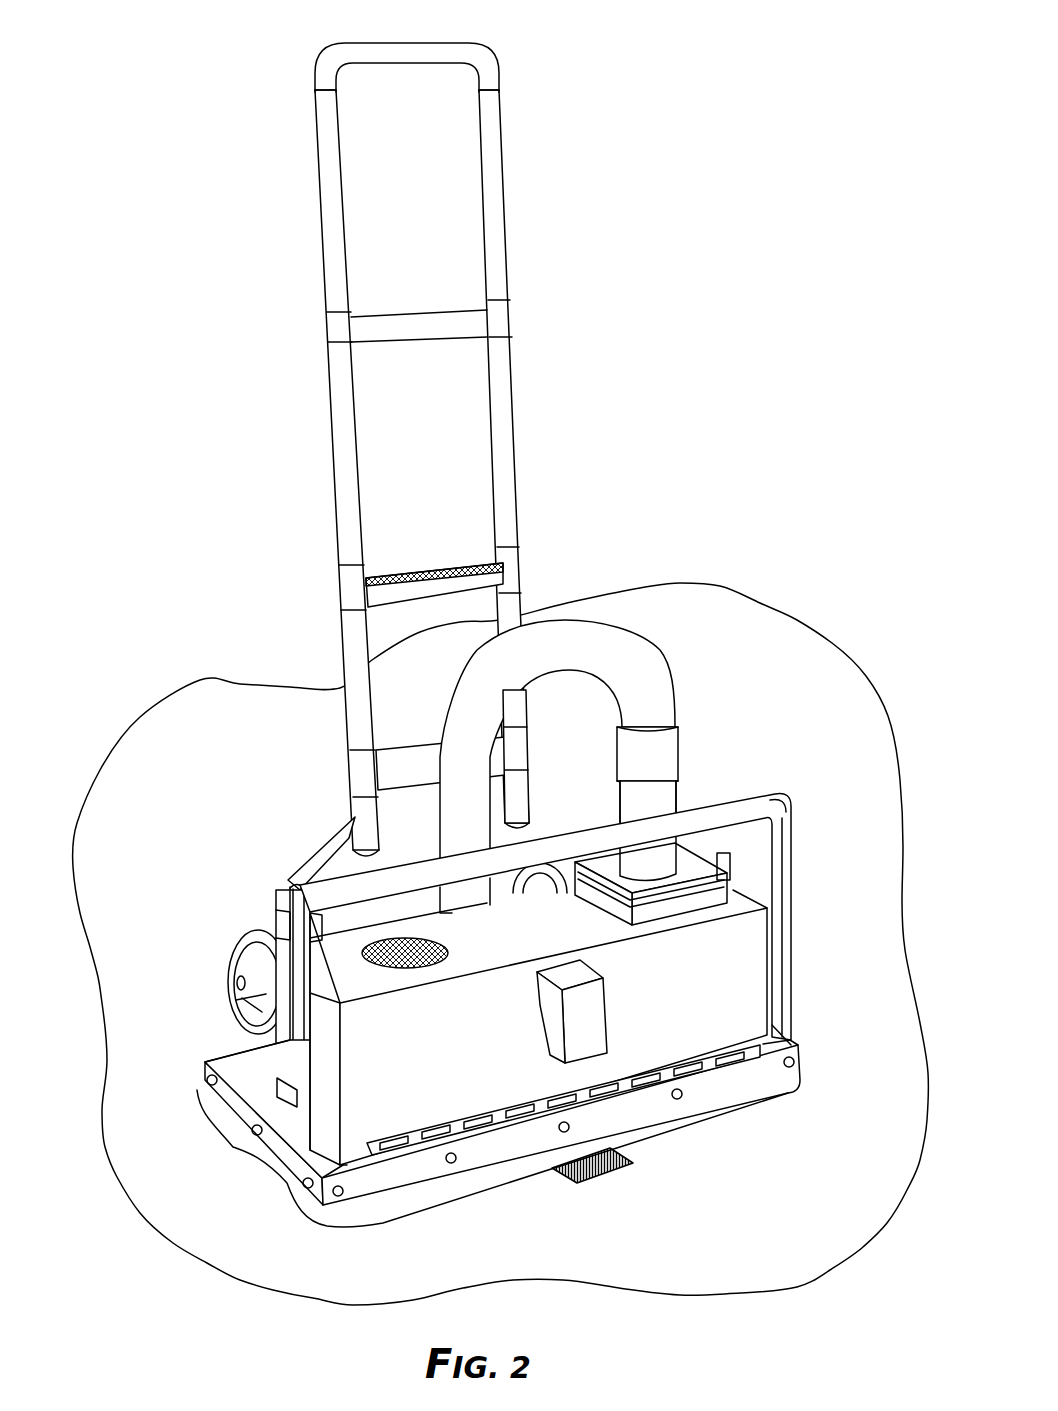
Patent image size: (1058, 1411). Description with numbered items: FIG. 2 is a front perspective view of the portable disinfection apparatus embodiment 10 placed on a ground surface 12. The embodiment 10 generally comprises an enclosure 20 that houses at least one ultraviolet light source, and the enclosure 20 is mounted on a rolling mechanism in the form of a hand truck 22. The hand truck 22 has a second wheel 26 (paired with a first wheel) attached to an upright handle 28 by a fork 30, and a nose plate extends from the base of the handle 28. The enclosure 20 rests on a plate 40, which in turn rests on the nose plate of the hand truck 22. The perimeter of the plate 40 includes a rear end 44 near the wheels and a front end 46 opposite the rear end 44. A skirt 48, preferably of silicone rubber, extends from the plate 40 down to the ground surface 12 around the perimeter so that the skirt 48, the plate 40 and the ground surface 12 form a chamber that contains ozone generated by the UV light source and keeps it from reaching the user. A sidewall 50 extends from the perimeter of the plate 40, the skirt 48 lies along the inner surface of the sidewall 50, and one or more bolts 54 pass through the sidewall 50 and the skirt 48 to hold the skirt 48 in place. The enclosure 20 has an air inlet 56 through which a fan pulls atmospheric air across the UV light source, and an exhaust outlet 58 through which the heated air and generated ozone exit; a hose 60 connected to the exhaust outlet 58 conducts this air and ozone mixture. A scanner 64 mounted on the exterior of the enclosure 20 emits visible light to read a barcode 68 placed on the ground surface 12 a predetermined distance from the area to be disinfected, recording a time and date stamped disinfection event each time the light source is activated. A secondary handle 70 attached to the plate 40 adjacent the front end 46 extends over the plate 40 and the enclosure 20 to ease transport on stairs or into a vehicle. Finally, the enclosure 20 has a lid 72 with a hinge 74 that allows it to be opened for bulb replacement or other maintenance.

The embodiment 10 is at (826, 182).
The ground surface 12 is at (750, 668).
The enclosure 20 is at (748, 962).
The hand truck 22 is at (536, 408).
The second wheel 26 is at (232, 942).
The handle 28 is at (478, 57).
The fork 30 is at (262, 996).
The plate 40 is at (212, 1104).
The rear end 44 is at (212, 950).
The front end 46 is at (790, 1170).
The skirt 48 is at (403, 1197).
The sidewall 50 is at (510, 1147).
The bolt 54 is at (677, 1100).
The air inlet 56 is at (440, 940).
The exhaust outlet 58 is at (710, 845).
The hose 60 is at (565, 630).
The scanner 64 is at (588, 1010).
The barcode 68 is at (605, 1177).
The secondary handle 70 is at (695, 815).
The lid 72 is at (290, 1105).
The hinge 74 is at (740, 1060).